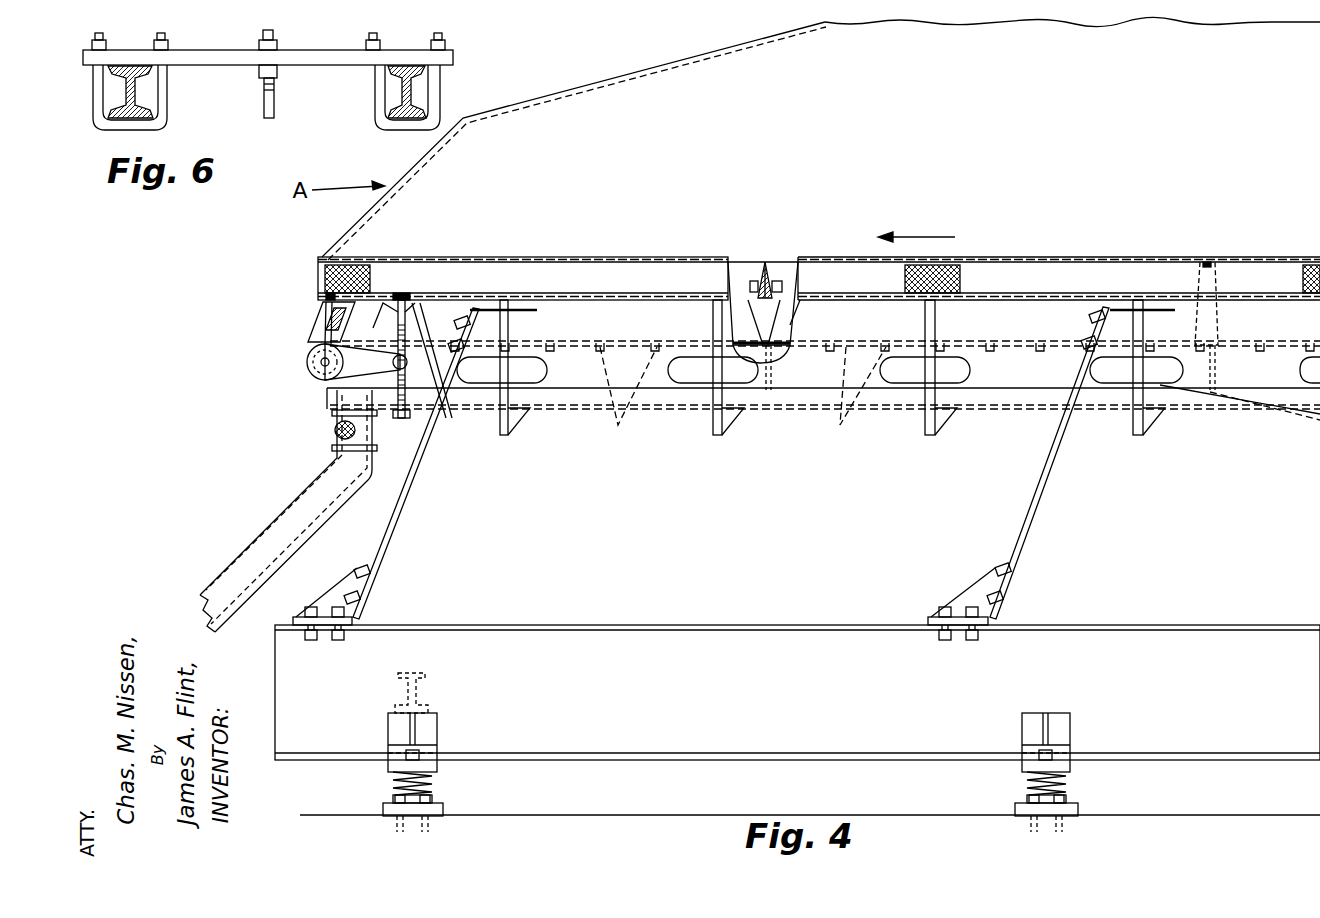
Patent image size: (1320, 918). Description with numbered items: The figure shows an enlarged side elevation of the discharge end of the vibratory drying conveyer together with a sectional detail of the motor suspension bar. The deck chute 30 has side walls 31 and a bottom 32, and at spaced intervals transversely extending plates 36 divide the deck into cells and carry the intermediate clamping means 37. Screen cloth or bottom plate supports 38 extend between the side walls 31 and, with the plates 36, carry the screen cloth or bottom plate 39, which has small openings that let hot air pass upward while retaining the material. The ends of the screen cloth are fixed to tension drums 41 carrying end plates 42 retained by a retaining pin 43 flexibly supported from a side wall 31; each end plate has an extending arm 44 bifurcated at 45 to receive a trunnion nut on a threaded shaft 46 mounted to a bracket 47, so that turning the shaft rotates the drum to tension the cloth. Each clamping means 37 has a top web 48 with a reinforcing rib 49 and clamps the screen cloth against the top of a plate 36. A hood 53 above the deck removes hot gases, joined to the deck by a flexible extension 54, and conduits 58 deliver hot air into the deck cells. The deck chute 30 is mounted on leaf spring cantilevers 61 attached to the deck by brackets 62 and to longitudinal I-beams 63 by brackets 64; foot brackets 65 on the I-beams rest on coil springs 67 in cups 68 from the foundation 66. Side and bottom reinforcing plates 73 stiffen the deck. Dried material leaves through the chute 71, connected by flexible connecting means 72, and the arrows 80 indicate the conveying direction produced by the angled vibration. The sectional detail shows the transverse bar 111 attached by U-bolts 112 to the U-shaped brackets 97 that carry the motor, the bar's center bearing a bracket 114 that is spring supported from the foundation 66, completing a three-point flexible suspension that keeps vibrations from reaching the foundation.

In FIG. 6, the transverse bar 111 is at (322, 52).
In FIG. 6, the U-bolts 112 is at (167, 96).
In FIG. 6, the U-shaped brackets 97 is at (158, 115).
In FIG. 6, the bracket 114 is at (272, 100).
In FIG. 4, the hood 53 is at (658, 92).
In FIG. 4, the flexible extension 54 is at (592, 278).
In FIG. 4, the deck chute 30 is at (1062, 322).
In FIG. 4, the bottom 32 is at (1025, 400).
In FIG. 4, the arrows 80 is at (933, 236).
In FIG. 4, the conduits 58 is at (545, 382).
In FIG. 4, the reinforcing plates 73 is at (512, 420).
In FIG. 4, the screen cloth or bottom plate supports 38 is at (743, 398).
In FIG. 4, the brackets 62 is at (490, 300).
In FIG. 4, the leaf spring cantilevers 61 is at (407, 525).
In FIG. 4, the brackets 64 is at (378, 592).
In FIG. 4, the I-beams 63 is at (1212, 643).
In FIG. 4, the foot brackets 65 is at (398, 765).
In FIG. 4, the coil springs 67 is at (430, 782).
In FIG. 4, the cups 68 is at (445, 810).
In FIG. 4, the foundation 66 is at (1152, 815).
In FIG. 4, the chute 71 is at (255, 555).
In FIG. 4, the flexible connecting means 72 is at (337, 432).
In FIG. 4, the tension drums 41 is at (318, 360).
In FIG. 4, the end plates 42 is at (362, 372).
In FIG. 4, the retaining pin 43 is at (330, 328).
In FIG. 4, the extending arm 44 is at (408, 370).
In FIG. 4, the bifurcation 45 is at (425, 355).
In FIG. 4, the threaded shaft 46 is at (402, 405).
In FIG. 4, the bracket 47 is at (430, 298).
In FIG. 4, the side walls 31 is at (742, 290).
In FIG. 4, the transversely extending plates 36 is at (788, 346).
In FIG. 4, the clamping means 37 is at (774, 278).
In FIG. 4, the top web 48 is at (758, 280).
In FIG. 4, the reinforcing rib 49 is at (768, 275).
In FIG. 4, the screen cloth or bottom plate 39 is at (737, 336).